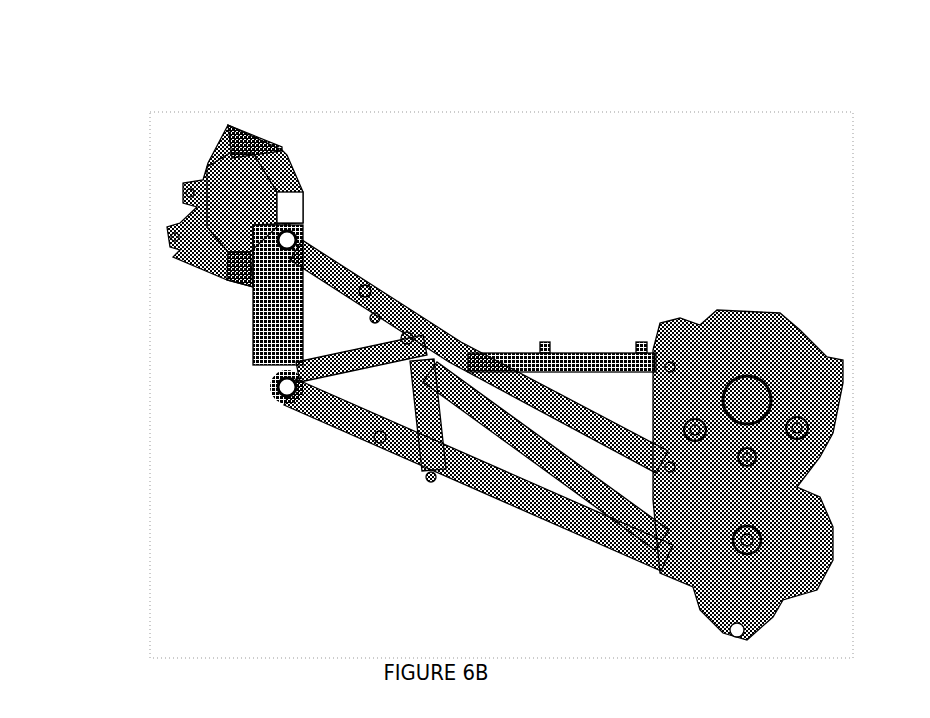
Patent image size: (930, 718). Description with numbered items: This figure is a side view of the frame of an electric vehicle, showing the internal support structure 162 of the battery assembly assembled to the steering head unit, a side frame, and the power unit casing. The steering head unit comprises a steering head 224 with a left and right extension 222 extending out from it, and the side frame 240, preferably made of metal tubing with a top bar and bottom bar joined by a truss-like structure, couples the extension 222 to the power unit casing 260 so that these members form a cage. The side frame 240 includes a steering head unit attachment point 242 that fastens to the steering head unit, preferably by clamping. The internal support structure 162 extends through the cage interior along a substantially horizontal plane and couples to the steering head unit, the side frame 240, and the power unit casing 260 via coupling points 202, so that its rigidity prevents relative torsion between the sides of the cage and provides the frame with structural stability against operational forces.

The coupling points 202 is at (461, 308).
The internal support structure 162 is at (518, 357).
The extension 222 is at (240, 250).
The steering head 224 is at (256, 132).
The side frame 240 is at (440, 452).
The steering head unit attachment point 242 is at (210, 372).
The power unit casing 260 is at (741, 317).